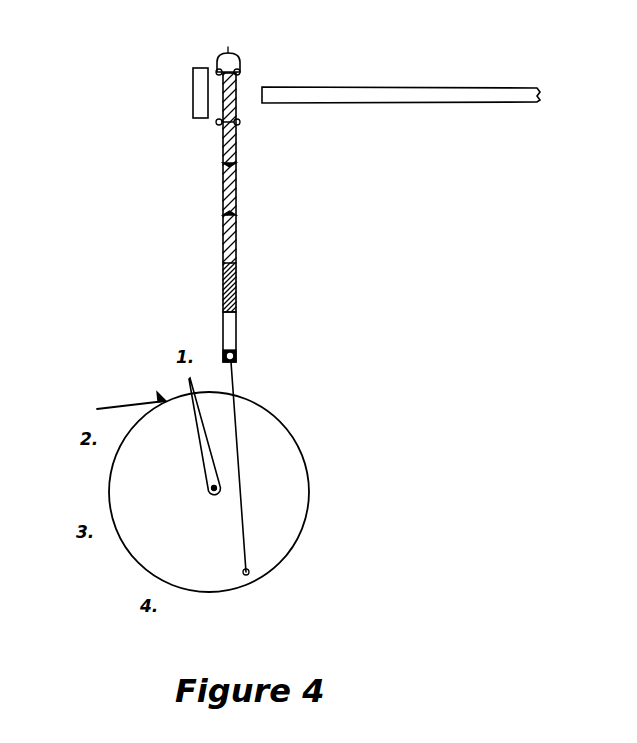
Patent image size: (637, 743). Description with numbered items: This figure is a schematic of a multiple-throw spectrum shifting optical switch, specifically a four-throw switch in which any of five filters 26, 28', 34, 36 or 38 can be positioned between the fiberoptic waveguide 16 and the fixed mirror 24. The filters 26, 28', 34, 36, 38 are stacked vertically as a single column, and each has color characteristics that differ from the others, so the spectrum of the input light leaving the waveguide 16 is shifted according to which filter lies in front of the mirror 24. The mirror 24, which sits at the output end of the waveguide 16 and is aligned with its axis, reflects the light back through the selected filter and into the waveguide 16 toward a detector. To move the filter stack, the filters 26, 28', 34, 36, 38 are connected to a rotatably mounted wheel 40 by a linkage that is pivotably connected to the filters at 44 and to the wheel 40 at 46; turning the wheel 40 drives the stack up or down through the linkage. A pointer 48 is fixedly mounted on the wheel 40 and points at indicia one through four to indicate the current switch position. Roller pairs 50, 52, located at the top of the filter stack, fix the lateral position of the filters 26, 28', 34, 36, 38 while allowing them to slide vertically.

The fiberoptic waveguide 16 is at (432, 88).
The fixed mirror 24 is at (193, 80).
The filter 26 is at (237, 88).
The filter 28' is at (256, 166).
The filter 34 is at (237, 196).
The filter 36 is at (237, 243).
The filter 38 is at (237, 291).
The rotatably mounted wheel 40 is at (297, 480).
The pivot connection to filters 44 is at (237, 338).
The pivot connection to wheel 46 is at (250, 582).
The pointer 48 is at (205, 450).
The roller pair 50 is at (227, 52).
The roller pair 52 is at (216, 123).